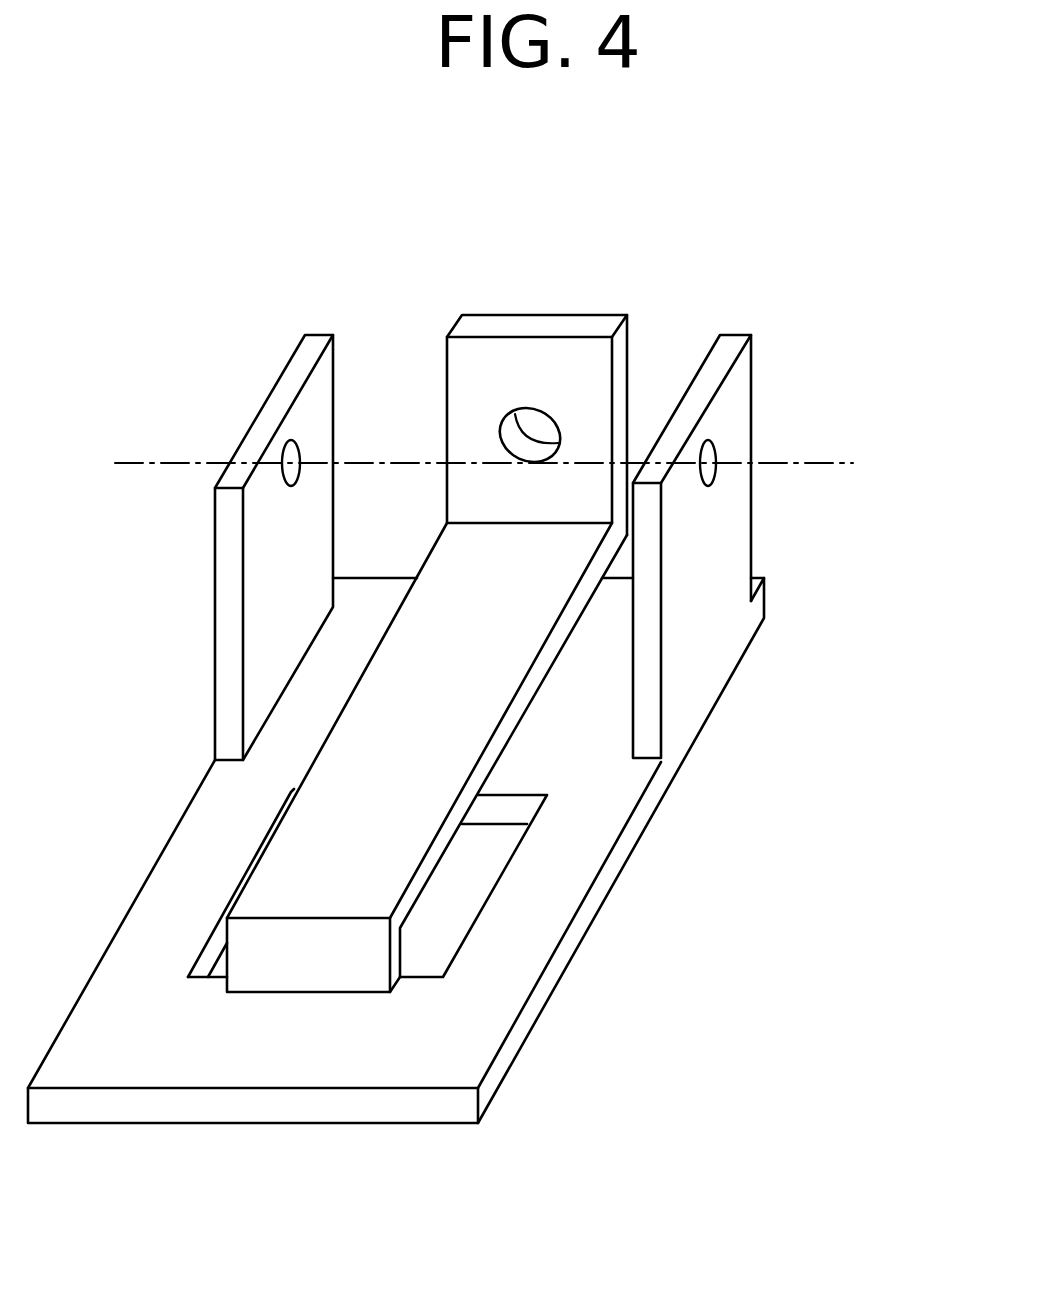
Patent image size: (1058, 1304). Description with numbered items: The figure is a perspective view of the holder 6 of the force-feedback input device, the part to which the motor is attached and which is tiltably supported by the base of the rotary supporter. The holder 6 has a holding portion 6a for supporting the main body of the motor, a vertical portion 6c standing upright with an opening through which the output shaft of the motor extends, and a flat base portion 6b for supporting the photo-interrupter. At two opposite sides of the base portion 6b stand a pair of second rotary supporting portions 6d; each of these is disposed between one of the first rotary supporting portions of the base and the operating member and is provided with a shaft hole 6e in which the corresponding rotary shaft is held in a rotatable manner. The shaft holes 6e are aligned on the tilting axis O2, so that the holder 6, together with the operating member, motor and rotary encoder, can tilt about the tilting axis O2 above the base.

The holder 6 is at (290, 313).
The holding portion 6a is at (460, 707).
The base portion 6b is at (358, 1033).
The vertical portion 6c is at (557, 327).
The second rotary supporting portions 6d is at (285, 387).
The shaft hole 6e is at (295, 483).
The tilting axis O2 is at (522, 454).